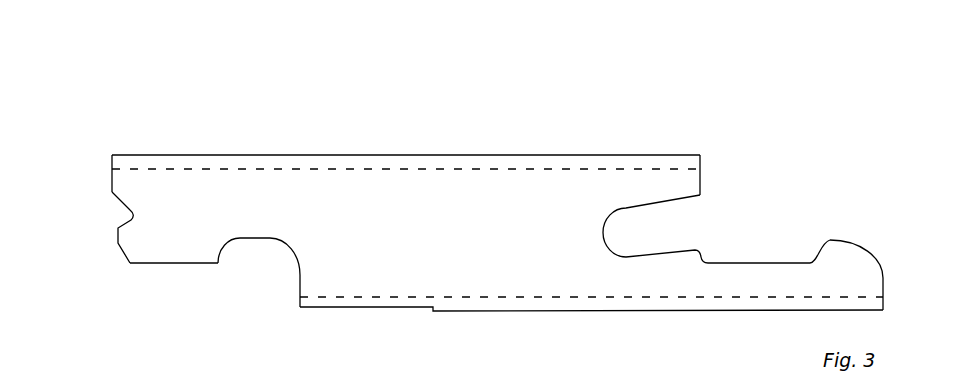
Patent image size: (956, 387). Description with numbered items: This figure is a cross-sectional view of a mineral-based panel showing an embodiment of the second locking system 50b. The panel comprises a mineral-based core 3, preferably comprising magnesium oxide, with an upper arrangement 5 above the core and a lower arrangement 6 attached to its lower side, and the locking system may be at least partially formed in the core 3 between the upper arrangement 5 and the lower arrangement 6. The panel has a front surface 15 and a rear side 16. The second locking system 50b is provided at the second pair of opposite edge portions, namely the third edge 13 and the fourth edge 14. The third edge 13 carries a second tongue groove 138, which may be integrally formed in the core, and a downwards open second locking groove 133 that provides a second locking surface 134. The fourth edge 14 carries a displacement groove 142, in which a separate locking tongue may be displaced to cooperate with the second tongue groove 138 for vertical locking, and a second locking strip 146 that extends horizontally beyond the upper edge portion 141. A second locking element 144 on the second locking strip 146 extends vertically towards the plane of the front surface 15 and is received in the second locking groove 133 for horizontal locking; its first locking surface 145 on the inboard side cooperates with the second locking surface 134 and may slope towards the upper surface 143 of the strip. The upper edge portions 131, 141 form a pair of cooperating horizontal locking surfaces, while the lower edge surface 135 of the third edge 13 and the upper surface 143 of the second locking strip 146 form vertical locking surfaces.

The second locking system 50b is at (124, 71).
The mineral-based core 3 is at (497, 277).
The upper arrangement 5 is at (433, 165).
The lower arrangement 6 is at (393, 306).
The third edge 13 is at (177, 144).
The fourth edge 14 is at (702, 132).
The front surface 15 is at (530, 156).
The rear side 16 is at (600, 312).
The upper edge portion 131 is at (112, 170).
The second locking groove 133 is at (268, 266).
The second locking surface 134 is at (232, 250).
The lower edge surface 135 is at (172, 265).
The second tongue groove 138 is at (112, 221).
The upper edge portion 141 is at (703, 182).
The displacement groove 142 is at (637, 245).
The upper surface of the locking strip 143 is at (751, 262).
The second locking element 144 is at (846, 251).
The first locking surface 145 is at (817, 260).
The second locking strip 146 is at (742, 284).